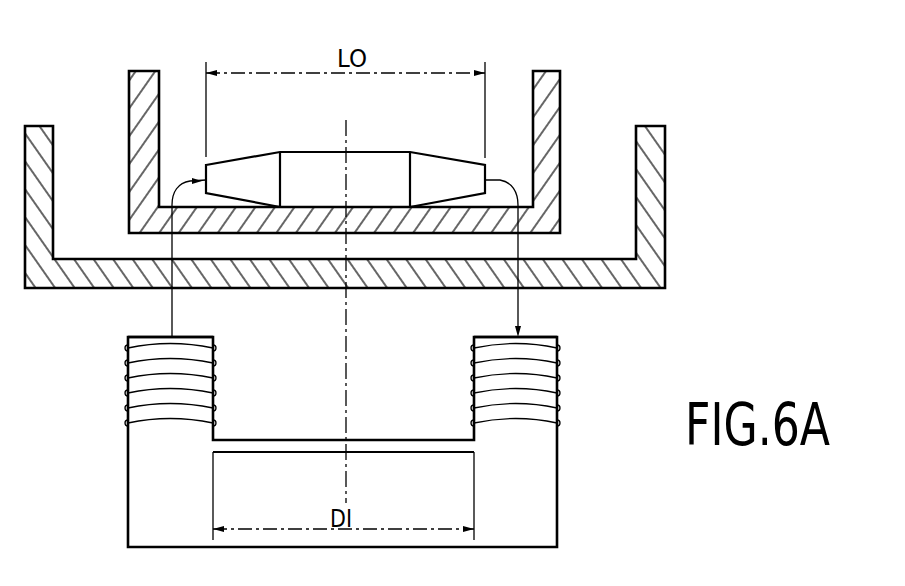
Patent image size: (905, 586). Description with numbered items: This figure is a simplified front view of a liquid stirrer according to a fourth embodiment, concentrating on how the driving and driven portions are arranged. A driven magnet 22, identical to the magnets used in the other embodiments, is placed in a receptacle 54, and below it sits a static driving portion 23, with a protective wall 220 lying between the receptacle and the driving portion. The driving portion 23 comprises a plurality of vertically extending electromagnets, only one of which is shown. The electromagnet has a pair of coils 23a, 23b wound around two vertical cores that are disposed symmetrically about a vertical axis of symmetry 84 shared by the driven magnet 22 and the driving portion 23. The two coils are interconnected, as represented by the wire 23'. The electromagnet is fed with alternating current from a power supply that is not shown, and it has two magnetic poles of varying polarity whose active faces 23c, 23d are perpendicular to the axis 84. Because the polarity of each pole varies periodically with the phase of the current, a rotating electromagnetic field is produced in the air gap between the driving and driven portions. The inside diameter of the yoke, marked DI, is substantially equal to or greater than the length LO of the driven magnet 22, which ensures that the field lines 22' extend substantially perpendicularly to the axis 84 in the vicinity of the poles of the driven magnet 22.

The protective wall 220 is at (650, 226).
The receptacle 54 is at (561, 90).
The driven magnet 22 is at (345, 148).
The vertical axis of symmetry 84 is at (345, 142).
The field lines 22' is at (376, 257).
The static driving portion 23 is at (398, 442).
The wire 23' is at (343, 467).
The coil 23a is at (128, 412).
The coil 23b is at (565, 350).
The active face 23c is at (161, 336).
The active face 23d is at (500, 336).